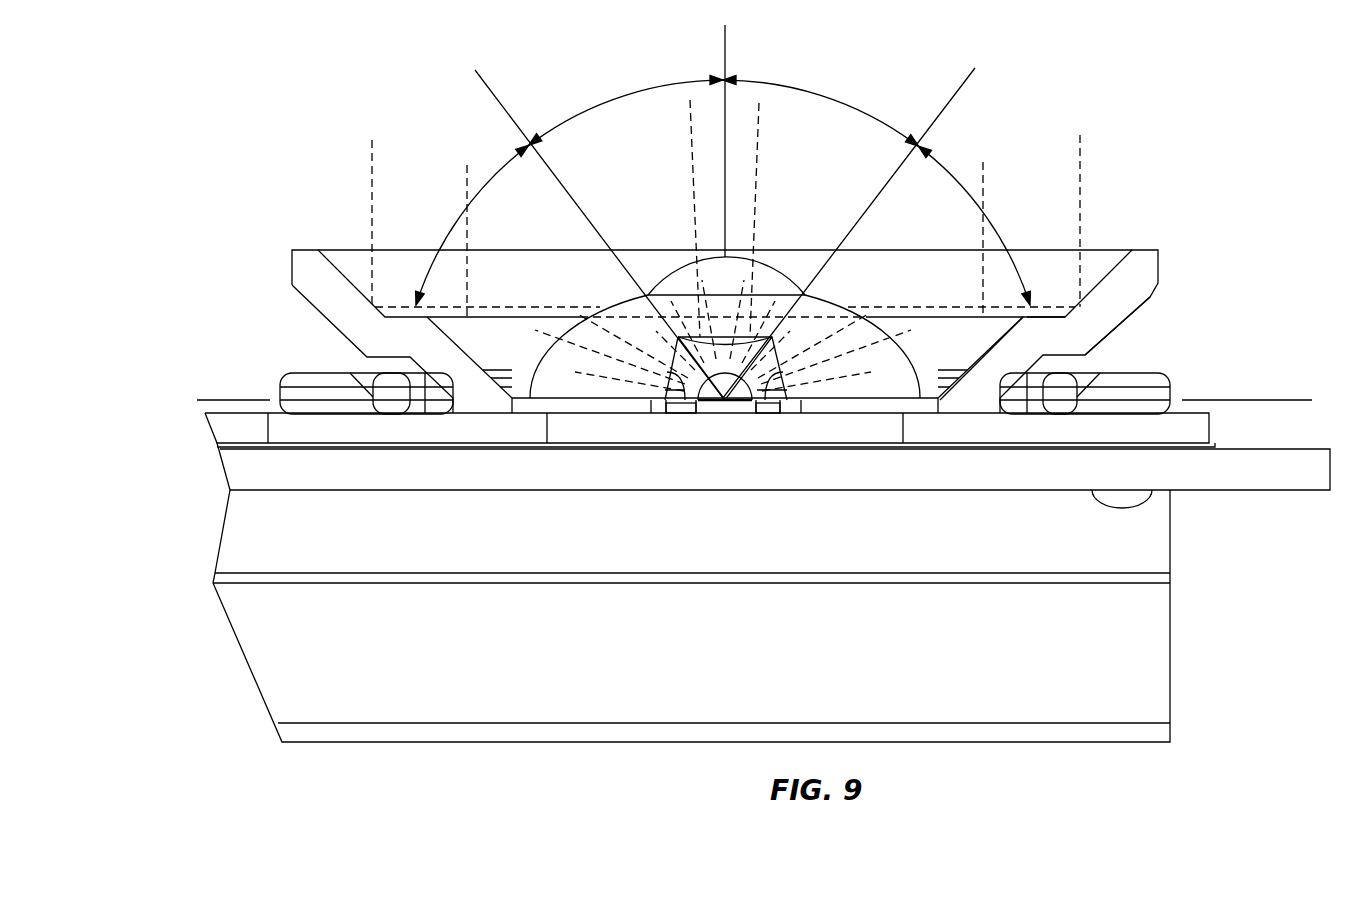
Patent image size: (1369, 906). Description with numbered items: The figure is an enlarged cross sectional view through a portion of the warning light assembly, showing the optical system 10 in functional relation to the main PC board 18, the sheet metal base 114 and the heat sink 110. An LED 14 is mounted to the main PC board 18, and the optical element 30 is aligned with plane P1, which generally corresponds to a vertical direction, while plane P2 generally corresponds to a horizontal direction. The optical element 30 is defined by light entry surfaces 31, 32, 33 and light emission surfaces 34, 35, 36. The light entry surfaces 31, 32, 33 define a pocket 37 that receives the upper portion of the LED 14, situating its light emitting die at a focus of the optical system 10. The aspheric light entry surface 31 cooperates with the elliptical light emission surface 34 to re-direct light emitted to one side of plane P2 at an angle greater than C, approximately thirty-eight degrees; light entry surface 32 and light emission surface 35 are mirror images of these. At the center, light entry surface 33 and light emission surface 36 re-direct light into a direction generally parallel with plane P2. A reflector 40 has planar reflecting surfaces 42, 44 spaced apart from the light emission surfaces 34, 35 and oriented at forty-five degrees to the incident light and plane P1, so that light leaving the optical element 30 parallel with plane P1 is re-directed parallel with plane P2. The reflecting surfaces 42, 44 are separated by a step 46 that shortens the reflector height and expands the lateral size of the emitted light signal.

The optical system 10 is at (272, 165).
The LED 14 is at (720, 407).
The main PC board 18 is at (1198, 422).
The optical element 30 is at (652, 262).
The light entry surface 31 is at (683, 400).
The light entry surface 32 is at (760, 402).
The light entry surface 33 is at (680, 353).
The light emission surface 34 is at (562, 333).
The light emission surface 35 is at (890, 330).
The light emission surface 36 is at (782, 275).
The pocket 37 is at (775, 400).
The reflector 40 is at (1145, 238).
The reflecting surface 42 is at (990, 350).
The reflecting surface 44 is at (1100, 283).
The step 46 is at (1043, 313).
The heat sink 110 is at (691, 616).
The sheet metal base 114 is at (1208, 478).
The plane P1 is at (220, 397).
The plane P2 is at (725, 48).
The angle C is at (612, 98).